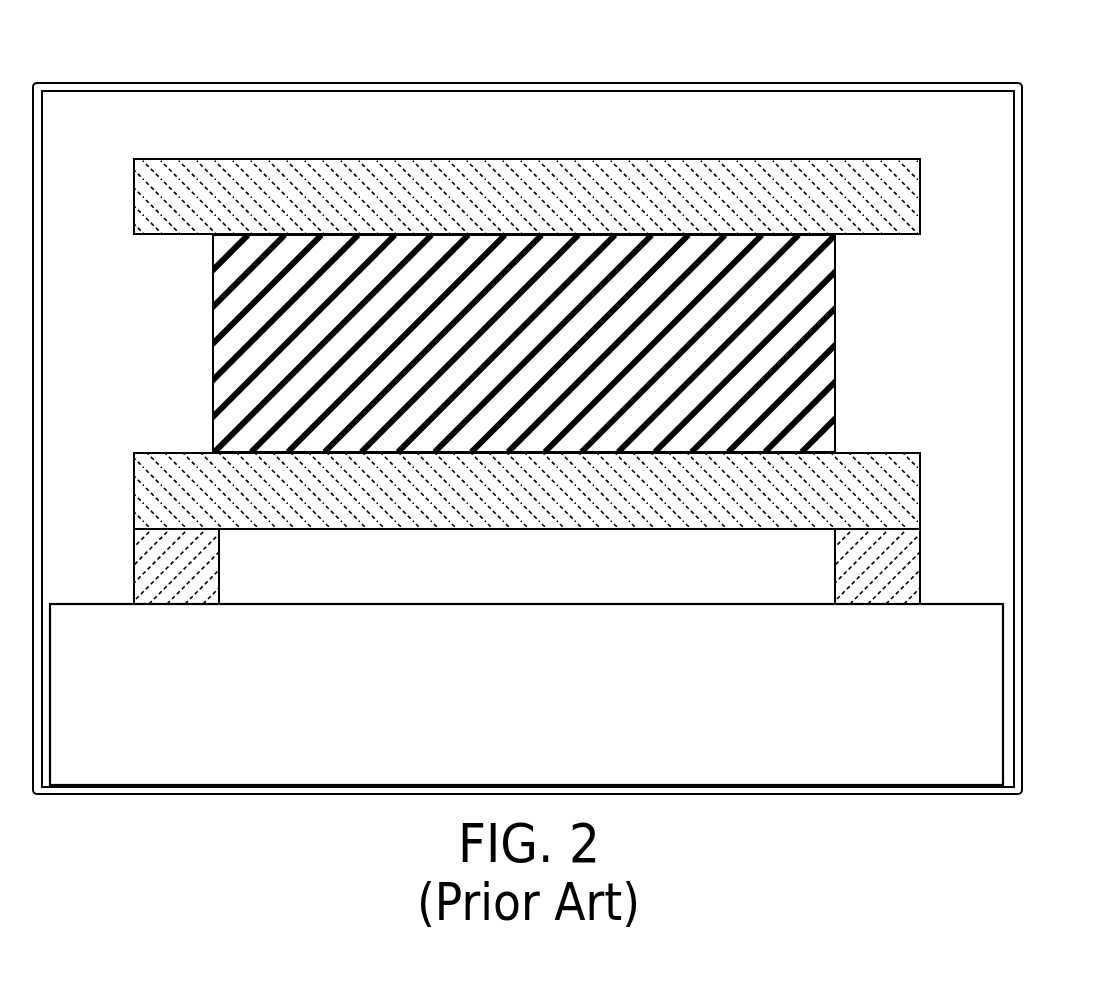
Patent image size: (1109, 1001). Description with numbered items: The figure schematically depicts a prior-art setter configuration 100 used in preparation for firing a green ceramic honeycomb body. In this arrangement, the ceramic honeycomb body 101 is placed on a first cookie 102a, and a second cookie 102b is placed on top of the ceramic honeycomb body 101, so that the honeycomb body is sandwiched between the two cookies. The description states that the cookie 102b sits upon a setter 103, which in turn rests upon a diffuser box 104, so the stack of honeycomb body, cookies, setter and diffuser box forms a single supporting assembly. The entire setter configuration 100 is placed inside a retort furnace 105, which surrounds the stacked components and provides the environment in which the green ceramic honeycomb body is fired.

The setter configuration 100 is at (370, 128).
The ceramic honeycomb body 101 is at (826, 334).
The first cookie 102a is at (913, 489).
The second cookie 102b is at (178, 236).
The setter 103 is at (912, 563).
The diffuser box 104 is at (988, 681).
The retort furnace 105 is at (845, 83).